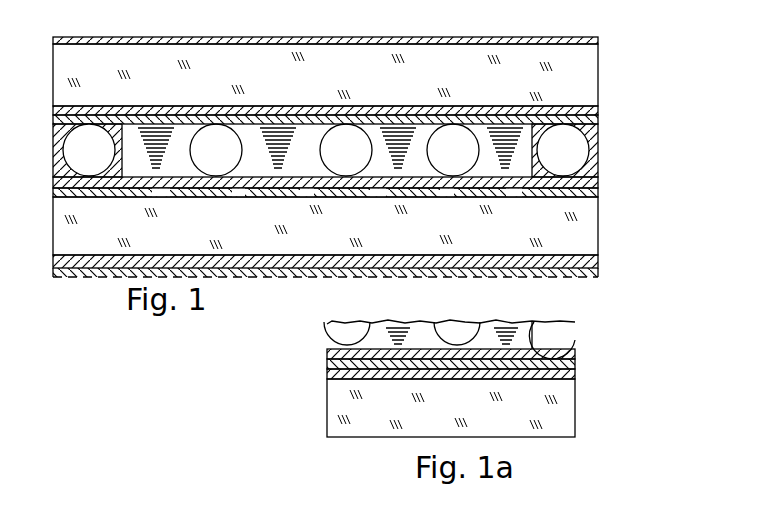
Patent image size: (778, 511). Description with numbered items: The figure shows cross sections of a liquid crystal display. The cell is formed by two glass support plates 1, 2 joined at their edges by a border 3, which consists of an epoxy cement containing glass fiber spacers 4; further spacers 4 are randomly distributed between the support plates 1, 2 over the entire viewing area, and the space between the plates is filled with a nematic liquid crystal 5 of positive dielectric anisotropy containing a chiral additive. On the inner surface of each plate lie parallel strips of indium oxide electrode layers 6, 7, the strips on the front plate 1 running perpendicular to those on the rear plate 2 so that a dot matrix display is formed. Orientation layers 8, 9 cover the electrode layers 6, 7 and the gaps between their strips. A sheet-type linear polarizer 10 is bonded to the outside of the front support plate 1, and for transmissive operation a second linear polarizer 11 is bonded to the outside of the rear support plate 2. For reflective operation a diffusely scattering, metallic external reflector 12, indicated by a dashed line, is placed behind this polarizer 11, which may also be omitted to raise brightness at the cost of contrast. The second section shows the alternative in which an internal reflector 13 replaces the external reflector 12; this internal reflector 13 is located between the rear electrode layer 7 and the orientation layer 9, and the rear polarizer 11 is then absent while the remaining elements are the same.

In FIG. 1, the glass support plate 1 is at (585, 68).
In FIG. 1, the glass support plate 2 is at (583, 238).
In FIG. 1A, the glass support plate 2 is at (565, 403).
In FIG. 1, the border 3 is at (60, 155).
In FIG. 1, the glass fiber spacers 4 is at (558, 137).
In FIG. 1A, the glass fiber spacers 4 is at (520, 326).
In FIG. 1, the nematic liquid crystal 5 is at (83, 183).
In FIG. 1A, the nematic liquid crystal 5 is at (388, 338).
In FIG. 1, the electrode layer 6 is at (582, 107).
In FIG. 1, the electrode layer 7 is at (520, 198).
In FIG. 1A, the electrode layer 7 is at (560, 374).
In FIG. 1, the orientation layer 8 is at (588, 118).
In FIG. 1, the orientation layer 9 is at (588, 183).
In FIG. 1A, the orientation layer 9 is at (575, 352).
In FIG. 1, the linear polarizer 10 is at (598, 37).
In FIG. 1, the linear polarizer 11 is at (597, 267).
In FIG. 1, the external reflector 12 is at (580, 277).
In FIG. 1A, the internal reflector 13 is at (575, 363).